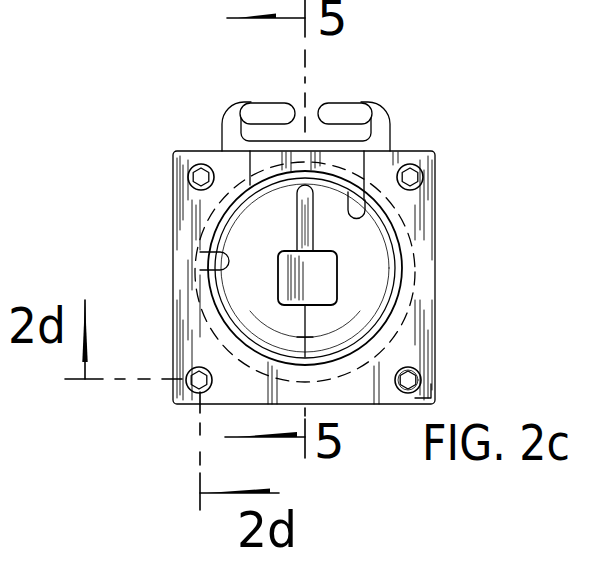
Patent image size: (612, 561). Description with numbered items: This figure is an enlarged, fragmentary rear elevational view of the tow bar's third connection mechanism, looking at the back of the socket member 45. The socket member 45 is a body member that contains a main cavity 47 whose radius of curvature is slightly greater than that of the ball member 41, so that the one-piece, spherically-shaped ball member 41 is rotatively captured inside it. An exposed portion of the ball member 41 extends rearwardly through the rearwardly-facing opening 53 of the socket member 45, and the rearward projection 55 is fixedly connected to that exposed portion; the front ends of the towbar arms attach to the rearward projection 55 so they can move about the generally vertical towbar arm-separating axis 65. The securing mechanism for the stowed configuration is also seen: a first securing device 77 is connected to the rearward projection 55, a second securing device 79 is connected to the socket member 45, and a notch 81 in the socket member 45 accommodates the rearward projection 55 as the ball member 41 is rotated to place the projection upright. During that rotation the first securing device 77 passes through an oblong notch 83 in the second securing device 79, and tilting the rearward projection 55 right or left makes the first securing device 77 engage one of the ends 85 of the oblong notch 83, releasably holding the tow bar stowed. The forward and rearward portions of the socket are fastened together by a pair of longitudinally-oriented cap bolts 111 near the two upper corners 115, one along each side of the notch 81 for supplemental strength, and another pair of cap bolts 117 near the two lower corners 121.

The ball member 41 is at (372, 255).
The socket member 45 is at (438, 237).
The main cavity 47 is at (198, 270).
The rearwardly-facing opening 53 is at (349, 194).
The rearward projection 55 is at (327, 292).
The towbar arm-separating axis 65 is at (302, 263).
The first securing device 77 is at (300, 218).
The second securing device 79 is at (375, 117).
The notch 81 is at (263, 167).
The oblong notch 83 is at (278, 146).
The ends of the oblong notch 85 is at (360, 148).
The cap bolts 111 is at (186, 183).
The upper corners 115 is at (183, 160).
The cap bolts 117 is at (420, 377).
The lower corners 121 is at (430, 396).